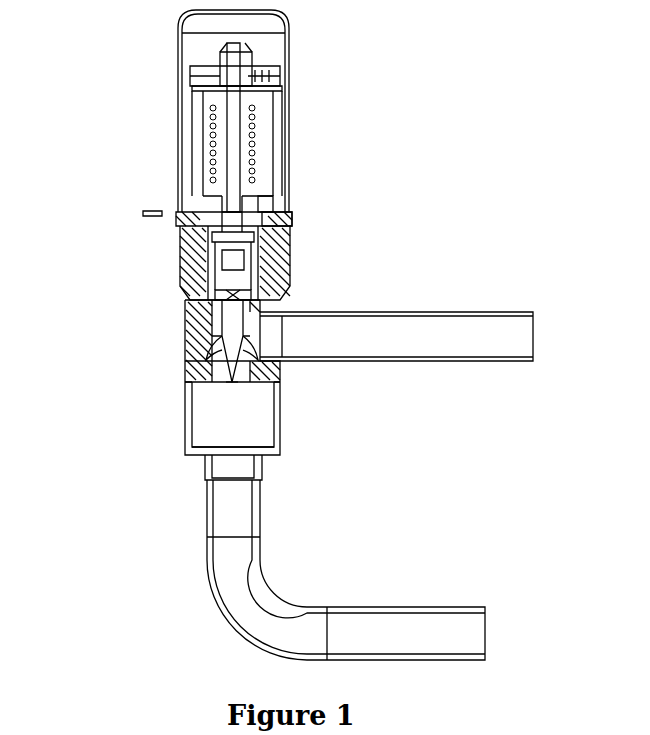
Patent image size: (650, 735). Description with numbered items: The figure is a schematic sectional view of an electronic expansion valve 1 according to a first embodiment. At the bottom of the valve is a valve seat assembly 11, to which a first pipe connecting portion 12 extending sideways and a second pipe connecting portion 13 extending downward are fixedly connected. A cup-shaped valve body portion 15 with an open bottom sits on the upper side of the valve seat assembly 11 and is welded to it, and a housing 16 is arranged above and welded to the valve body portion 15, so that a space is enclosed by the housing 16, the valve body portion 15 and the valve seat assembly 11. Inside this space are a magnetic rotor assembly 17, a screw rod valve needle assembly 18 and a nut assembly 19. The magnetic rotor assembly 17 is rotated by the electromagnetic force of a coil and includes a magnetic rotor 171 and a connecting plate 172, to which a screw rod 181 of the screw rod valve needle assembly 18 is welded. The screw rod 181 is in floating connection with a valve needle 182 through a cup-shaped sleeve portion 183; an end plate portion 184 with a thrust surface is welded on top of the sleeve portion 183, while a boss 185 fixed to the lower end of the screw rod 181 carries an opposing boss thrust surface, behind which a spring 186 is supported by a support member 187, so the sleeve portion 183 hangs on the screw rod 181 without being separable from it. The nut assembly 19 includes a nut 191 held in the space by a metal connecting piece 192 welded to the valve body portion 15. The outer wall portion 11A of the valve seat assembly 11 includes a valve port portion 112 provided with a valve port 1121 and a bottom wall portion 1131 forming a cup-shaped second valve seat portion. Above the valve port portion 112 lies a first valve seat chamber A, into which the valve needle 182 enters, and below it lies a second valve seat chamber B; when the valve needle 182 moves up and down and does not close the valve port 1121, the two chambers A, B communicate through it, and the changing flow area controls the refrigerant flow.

The electronic expansion valve 1 is at (165, 483).
The valve seat assembly 11 is at (172, 375).
The outer wall portion 11A is at (186, 408).
The valve port portion 112 is at (268, 365).
The valve port 1121 is at (235, 382).
The bottom wall portion 1131 is at (262, 450).
The first pipe connecting portion 12 is at (355, 316).
The second pipe connecting portion 13 is at (292, 598).
The valve body portion 15 is at (285, 265).
The housing 16 is at (286, 168).
The magnetic rotor assembly 17 is at (307, 125).
The magnetic rotor 171 is at (283, 135).
The connecting plate 172 is at (282, 78).
The screw rod valve needle assembly 18 is at (145, 212).
The screw rod 181 is at (240, 160).
The valve needle 182 is at (174, 336).
The sleeve portion 183 is at (225, 292).
The end plate portion 184 is at (222, 200).
The boss 185 is at (225, 236).
The spring 186 is at (215, 250).
The support member 187 is at (222, 262).
The nut assembly 19 is at (341, 195).
The nut 191 is at (286, 205).
The connecting piece 192 is at (286, 228).
The first valve seat chamber A is at (262, 355).
The second valve seat chamber B is at (205, 438).